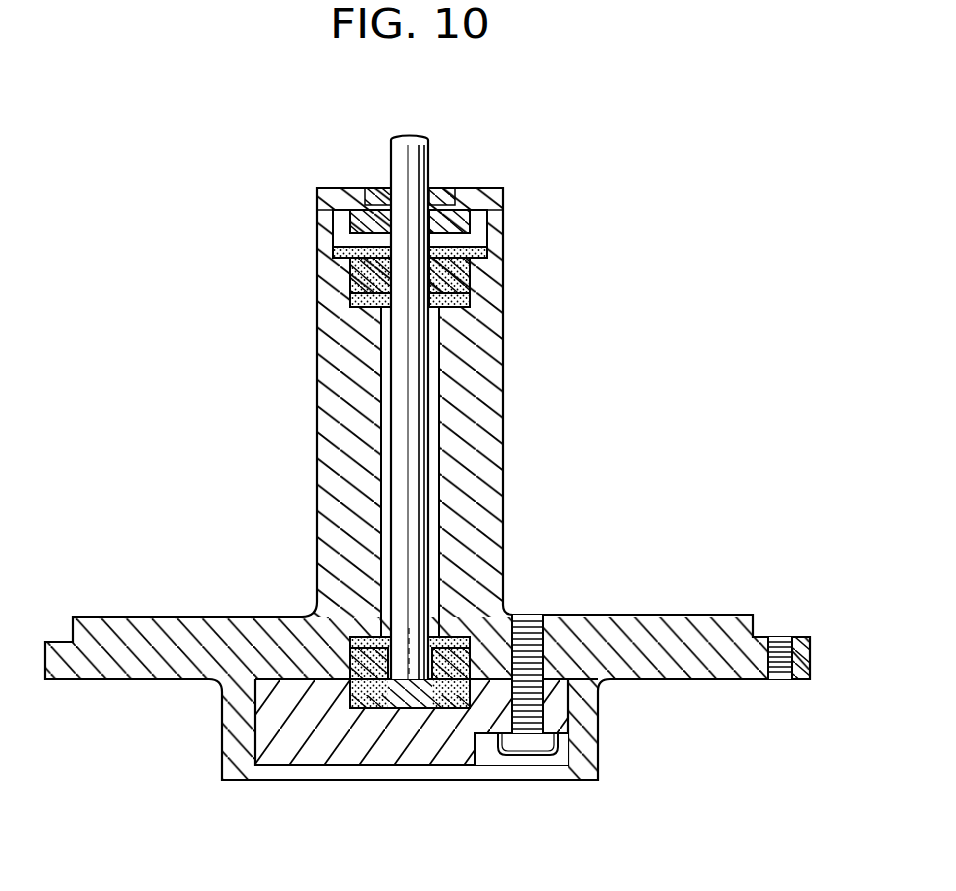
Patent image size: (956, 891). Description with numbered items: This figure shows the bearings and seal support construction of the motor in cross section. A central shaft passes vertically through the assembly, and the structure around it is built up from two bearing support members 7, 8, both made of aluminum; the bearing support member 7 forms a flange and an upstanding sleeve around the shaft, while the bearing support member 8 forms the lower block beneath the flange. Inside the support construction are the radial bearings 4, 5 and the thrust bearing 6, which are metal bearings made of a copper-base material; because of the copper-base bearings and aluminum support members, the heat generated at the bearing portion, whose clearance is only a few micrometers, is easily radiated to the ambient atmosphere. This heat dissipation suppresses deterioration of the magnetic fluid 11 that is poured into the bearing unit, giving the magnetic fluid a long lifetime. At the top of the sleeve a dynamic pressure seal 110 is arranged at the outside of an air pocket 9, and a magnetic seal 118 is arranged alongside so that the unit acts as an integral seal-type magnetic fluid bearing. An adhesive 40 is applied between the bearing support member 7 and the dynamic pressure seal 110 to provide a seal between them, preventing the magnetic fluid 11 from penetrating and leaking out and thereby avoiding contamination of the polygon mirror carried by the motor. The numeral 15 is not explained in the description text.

The radial bearing 4 is at (352, 280).
The radial bearing 5 is at (480, 664).
The thrust bearing 6 is at (445, 708).
The bearing support member 7 is at (118, 676).
The bearing support member 8 is at (316, 758).
The air pocket 9 is at (474, 243).
The magnetic fluid 11 is at (452, 387).
The shaft 15 is at (398, 141).
The adhesive 40 is at (328, 188).
The dynamic pressure seal 110 is at (470, 188).
The magnetic seal 118 is at (442, 186).